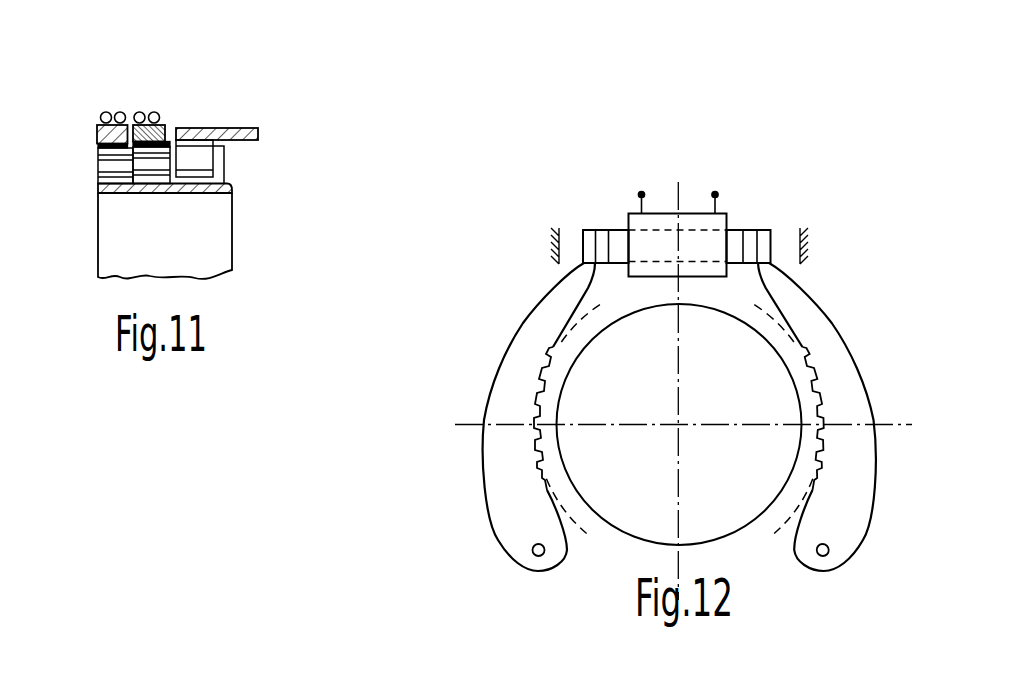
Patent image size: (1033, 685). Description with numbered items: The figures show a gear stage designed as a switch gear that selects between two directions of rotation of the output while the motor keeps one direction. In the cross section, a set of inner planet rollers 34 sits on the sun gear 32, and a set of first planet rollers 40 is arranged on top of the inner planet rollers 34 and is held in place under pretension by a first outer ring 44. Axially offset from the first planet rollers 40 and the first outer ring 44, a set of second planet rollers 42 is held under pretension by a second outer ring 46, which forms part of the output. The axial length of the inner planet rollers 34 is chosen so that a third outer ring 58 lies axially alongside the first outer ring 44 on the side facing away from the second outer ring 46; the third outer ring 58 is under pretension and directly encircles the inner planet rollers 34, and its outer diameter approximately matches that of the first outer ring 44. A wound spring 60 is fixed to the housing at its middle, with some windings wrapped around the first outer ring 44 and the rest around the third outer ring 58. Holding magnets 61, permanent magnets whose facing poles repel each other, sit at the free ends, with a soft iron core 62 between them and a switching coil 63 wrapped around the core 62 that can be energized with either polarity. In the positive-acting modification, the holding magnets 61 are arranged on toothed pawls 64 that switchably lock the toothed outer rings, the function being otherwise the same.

In FIG. 11, the sun gear 32 is at (98, 193).
In FIG. 11, the inner planet rollers 34 is at (108, 168).
In FIG. 11, the first planet rollers 40 is at (153, 163).
In FIG. 11, the second planet rollers 42 is at (202, 153).
In FIG. 11, the first outer ring 44 is at (168, 122).
In FIG. 11, the second outer ring 46 is at (220, 133).
In FIG. 11, the third outer ring 58 is at (95, 133).
In FIG. 11, the wound spring 60 is at (107, 113).
In FIG. 12, the holding magnets 61 is at (592, 243).
In FIG. 12, the soft iron core 62 is at (732, 245).
In FIG. 12, the switching coil 63 is at (666, 243).
In FIG. 12, the toothed pawls 64 is at (507, 492).